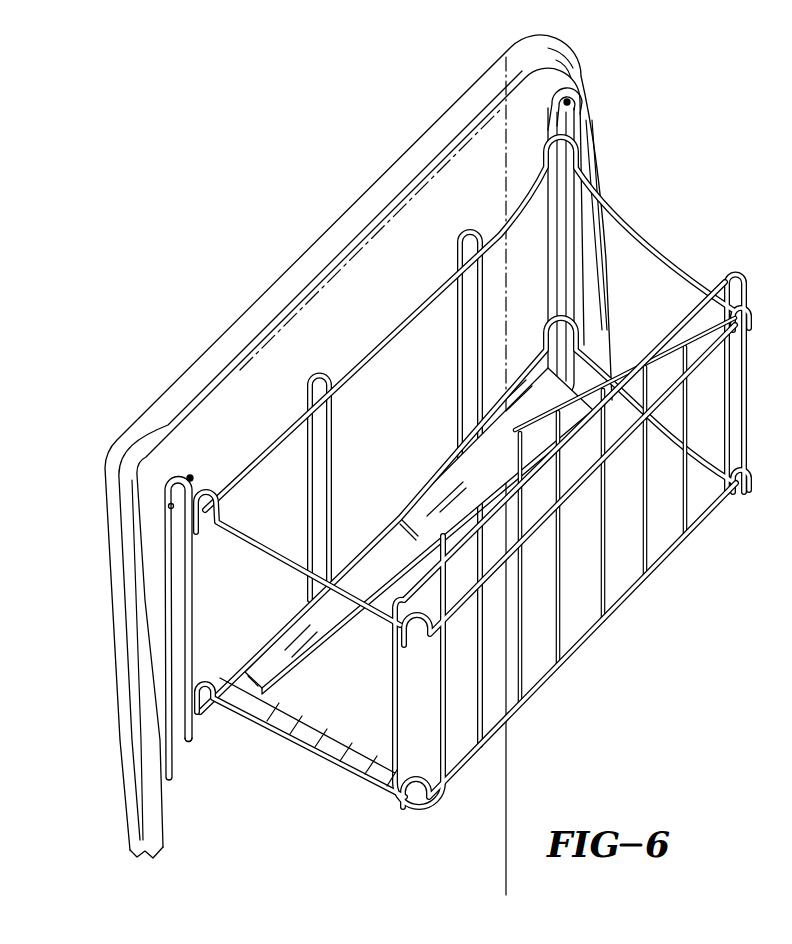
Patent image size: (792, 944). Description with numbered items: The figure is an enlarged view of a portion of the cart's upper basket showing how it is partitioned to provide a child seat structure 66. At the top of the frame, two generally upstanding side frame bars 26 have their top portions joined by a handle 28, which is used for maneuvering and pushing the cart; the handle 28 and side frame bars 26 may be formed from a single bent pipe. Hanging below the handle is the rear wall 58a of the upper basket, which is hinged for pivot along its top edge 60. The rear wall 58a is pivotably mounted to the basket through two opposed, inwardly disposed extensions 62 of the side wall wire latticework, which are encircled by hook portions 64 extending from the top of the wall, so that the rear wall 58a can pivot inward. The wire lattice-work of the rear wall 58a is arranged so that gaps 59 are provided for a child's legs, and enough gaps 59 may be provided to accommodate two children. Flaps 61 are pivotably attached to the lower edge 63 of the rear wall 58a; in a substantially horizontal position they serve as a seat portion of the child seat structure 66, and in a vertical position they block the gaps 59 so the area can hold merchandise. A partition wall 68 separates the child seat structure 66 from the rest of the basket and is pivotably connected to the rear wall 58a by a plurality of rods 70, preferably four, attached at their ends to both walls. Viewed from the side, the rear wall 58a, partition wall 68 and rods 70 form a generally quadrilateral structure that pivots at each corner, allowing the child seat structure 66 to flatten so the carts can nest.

The side frame bar 26 is at (133, 773).
The handle 28 is at (273, 288).
The rear wall 58a is at (397, 419).
The gap 59 is at (277, 510).
The top edge 60 is at (505, 198).
The flap 61 is at (509, 458).
The extension 62 is at (189, 477).
The lower edge 63 is at (232, 713).
The hook portion 64 is at (189, 478).
The child seat structure 66 is at (382, 446).
The partition wall 68 is at (668, 345).
The rod 70 is at (652, 253).